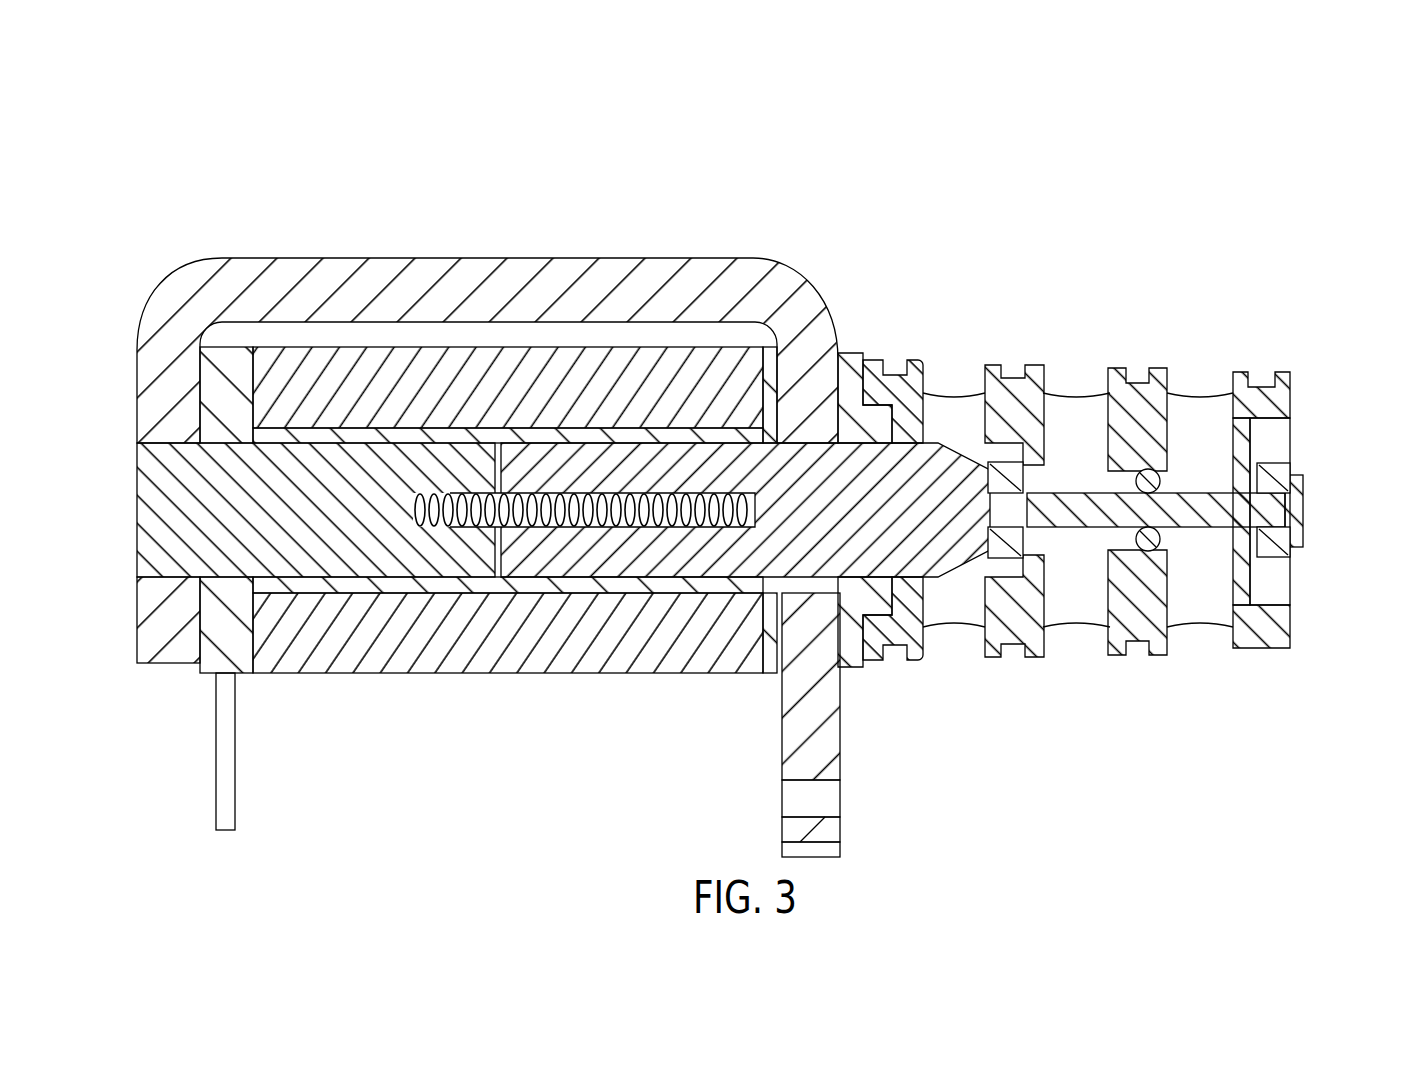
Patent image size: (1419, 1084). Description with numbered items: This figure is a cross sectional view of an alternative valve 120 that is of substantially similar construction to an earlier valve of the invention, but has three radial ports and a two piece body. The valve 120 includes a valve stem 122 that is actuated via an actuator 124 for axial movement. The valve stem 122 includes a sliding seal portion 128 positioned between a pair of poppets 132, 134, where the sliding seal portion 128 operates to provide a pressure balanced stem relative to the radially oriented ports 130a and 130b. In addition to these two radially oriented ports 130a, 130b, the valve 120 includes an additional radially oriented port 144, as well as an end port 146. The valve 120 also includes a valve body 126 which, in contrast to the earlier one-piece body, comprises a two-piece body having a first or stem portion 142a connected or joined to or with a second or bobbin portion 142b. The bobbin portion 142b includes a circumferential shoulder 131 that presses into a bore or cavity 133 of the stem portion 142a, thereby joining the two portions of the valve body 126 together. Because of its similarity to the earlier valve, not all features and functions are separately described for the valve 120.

The valve 120 is at (765, 471).
The valve stem 122 is at (1079, 481).
The actuator 124 is at (392, 728).
The valve body 126 is at (866, 337).
The sliding seal portion 128 is at (1126, 529).
The radially oriented port 130a is at (1200, 408).
The radially oriented port 130b is at (1065, 640).
The circumferential shoulder 131 is at (843, 449).
The poppet 132 is at (1313, 521).
The bore or cavity 133 is at (855, 572).
The poppet 134 is at (1038, 484).
The stem portion 142a is at (1290, 630).
The bobbin portion 142b is at (857, 667).
The radially oriented port 144 is at (955, 408).
The end port 146 is at (1275, 580).